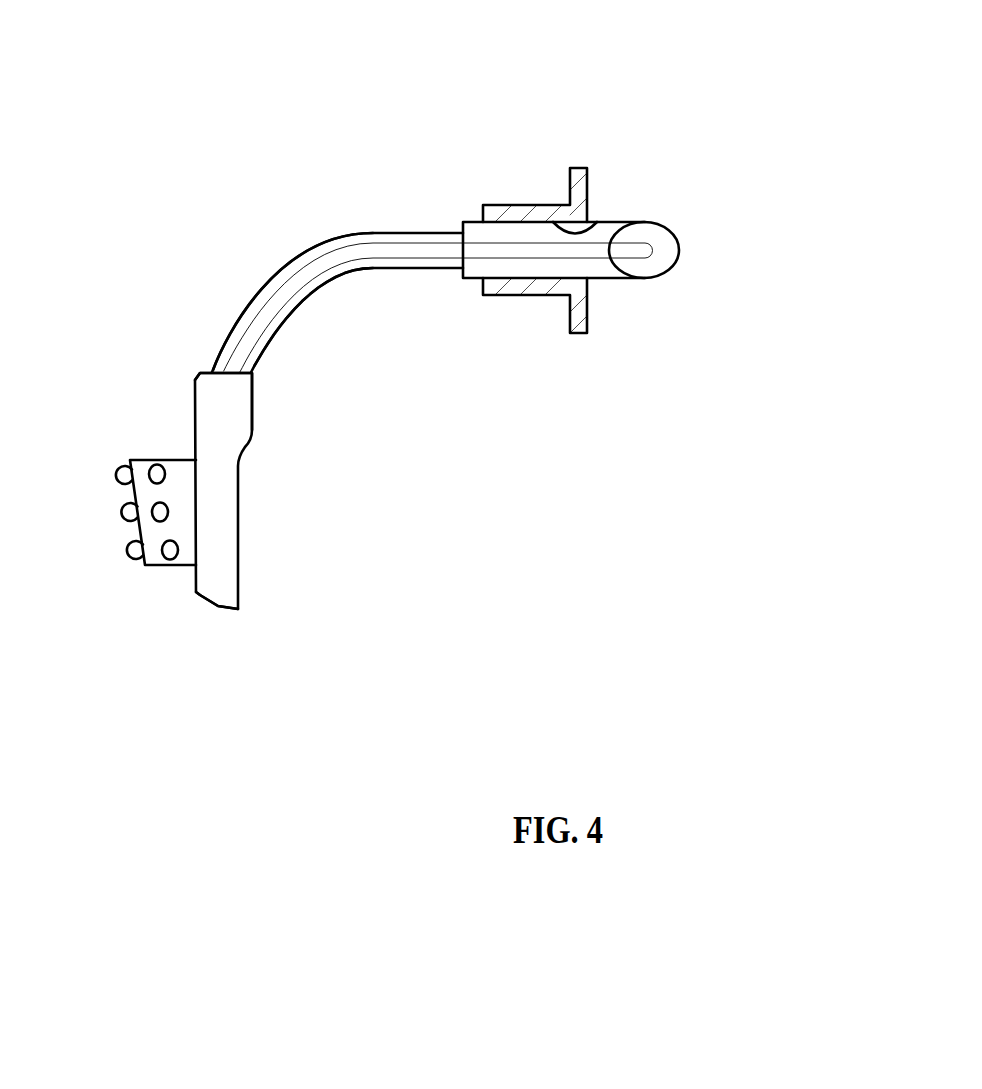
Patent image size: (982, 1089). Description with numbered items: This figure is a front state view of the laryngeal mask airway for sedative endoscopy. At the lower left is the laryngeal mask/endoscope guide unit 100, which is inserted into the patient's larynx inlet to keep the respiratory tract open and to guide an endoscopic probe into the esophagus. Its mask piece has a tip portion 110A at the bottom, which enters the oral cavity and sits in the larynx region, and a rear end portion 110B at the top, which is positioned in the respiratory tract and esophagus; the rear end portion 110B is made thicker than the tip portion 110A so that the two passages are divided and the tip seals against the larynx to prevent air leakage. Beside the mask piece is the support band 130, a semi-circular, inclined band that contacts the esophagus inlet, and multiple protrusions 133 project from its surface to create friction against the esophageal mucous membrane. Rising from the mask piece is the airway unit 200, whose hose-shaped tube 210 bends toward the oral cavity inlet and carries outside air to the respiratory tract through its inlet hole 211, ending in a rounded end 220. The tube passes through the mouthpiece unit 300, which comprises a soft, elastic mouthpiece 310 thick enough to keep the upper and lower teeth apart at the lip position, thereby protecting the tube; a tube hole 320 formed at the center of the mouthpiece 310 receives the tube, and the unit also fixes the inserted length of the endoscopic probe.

The laryngeal mask/endoscope guide unit 100 is at (227, 492).
The tip portion 110A is at (208, 607).
The rear end portion 110B is at (247, 393).
The support band 130 is at (175, 472).
The protrusions 133 is at (120, 465).
The airway unit 200 is at (367, 234).
The tube 210 is at (312, 252).
The inlet hole 211 is at (250, 325).
The tip 220 is at (643, 222).
The mouthpiece unit 300 is at (558, 196).
The mouthpiece 310 is at (588, 318).
The tube hole 320 is at (607, 222).